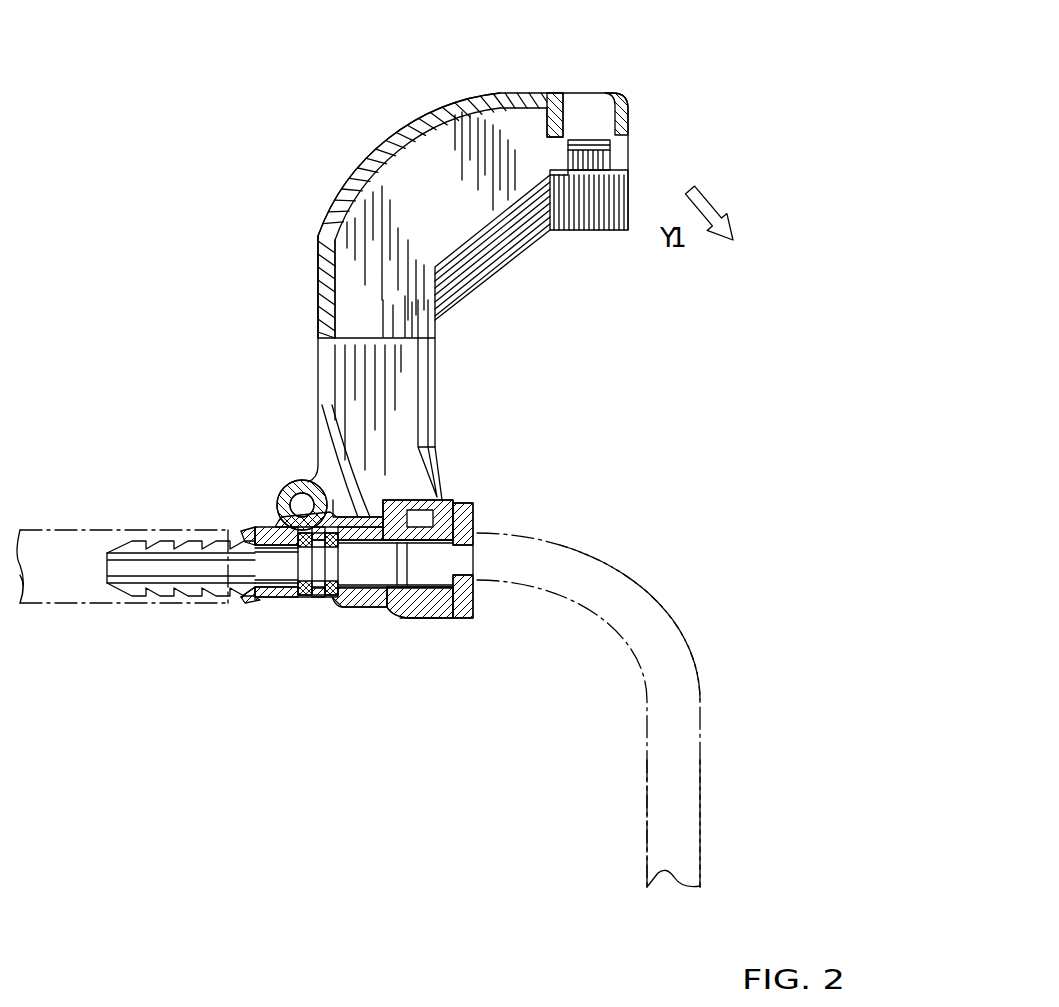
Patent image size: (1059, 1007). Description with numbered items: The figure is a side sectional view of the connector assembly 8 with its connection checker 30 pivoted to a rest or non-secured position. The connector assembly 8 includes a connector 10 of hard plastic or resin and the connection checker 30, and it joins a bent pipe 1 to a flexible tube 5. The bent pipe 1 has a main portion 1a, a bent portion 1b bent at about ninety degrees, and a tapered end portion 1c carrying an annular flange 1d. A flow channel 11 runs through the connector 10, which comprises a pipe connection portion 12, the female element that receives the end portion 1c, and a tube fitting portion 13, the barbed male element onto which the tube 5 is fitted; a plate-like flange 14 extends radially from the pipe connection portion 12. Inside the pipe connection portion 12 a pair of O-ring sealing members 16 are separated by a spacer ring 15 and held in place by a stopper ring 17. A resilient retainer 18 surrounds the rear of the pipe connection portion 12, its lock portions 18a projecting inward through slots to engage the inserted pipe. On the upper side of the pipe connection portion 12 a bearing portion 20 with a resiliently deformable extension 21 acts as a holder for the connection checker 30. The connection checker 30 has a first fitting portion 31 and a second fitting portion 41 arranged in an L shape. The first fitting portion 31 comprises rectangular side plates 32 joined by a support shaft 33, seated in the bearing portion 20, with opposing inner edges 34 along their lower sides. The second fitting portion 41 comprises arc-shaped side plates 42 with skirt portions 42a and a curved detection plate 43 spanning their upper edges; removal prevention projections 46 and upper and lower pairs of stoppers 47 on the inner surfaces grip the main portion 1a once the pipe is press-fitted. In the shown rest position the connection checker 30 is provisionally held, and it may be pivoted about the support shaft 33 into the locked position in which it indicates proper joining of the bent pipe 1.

The bent pipe 1 is at (702, 703).
The main portion 1a is at (673, 839).
The bent portion 1b is at (632, 599).
The end portion 1c is at (277, 600).
The annular flange 1d is at (410, 620).
The tube 5 is at (52, 528).
The connector assembly 8 is at (212, 364).
The connector 10 is at (252, 602).
The flow channel 11 is at (167, 590).
The pipe connection portion 12 is at (353, 607).
The tube fitting portion 13 is at (165, 543).
The flange 14 is at (390, 607).
The spacer ring 15 is at (320, 607).
The sealing members 16 is at (303, 607).
The stopper ring 17 is at (348, 470).
The retainer 18 is at (432, 621).
The lock portions 18a is at (470, 510).
The bearing portion 20 is at (307, 481).
The extension 21 is at (292, 479).
The connection checker 30 is at (338, 188).
The first fitting portion 31 is at (443, 418).
The side plates 32 is at (400, 355).
The support shaft 33 is at (278, 507).
The inner edges 34 is at (425, 390).
The second fitting portion 41 is at (314, 236).
The side plates 42 is at (465, 148).
The skirt portions 42a is at (508, 243).
The detection plate 43 is at (418, 137).
The removal prevention projections 46 is at (612, 153).
The stoppers 47 is at (556, 128).